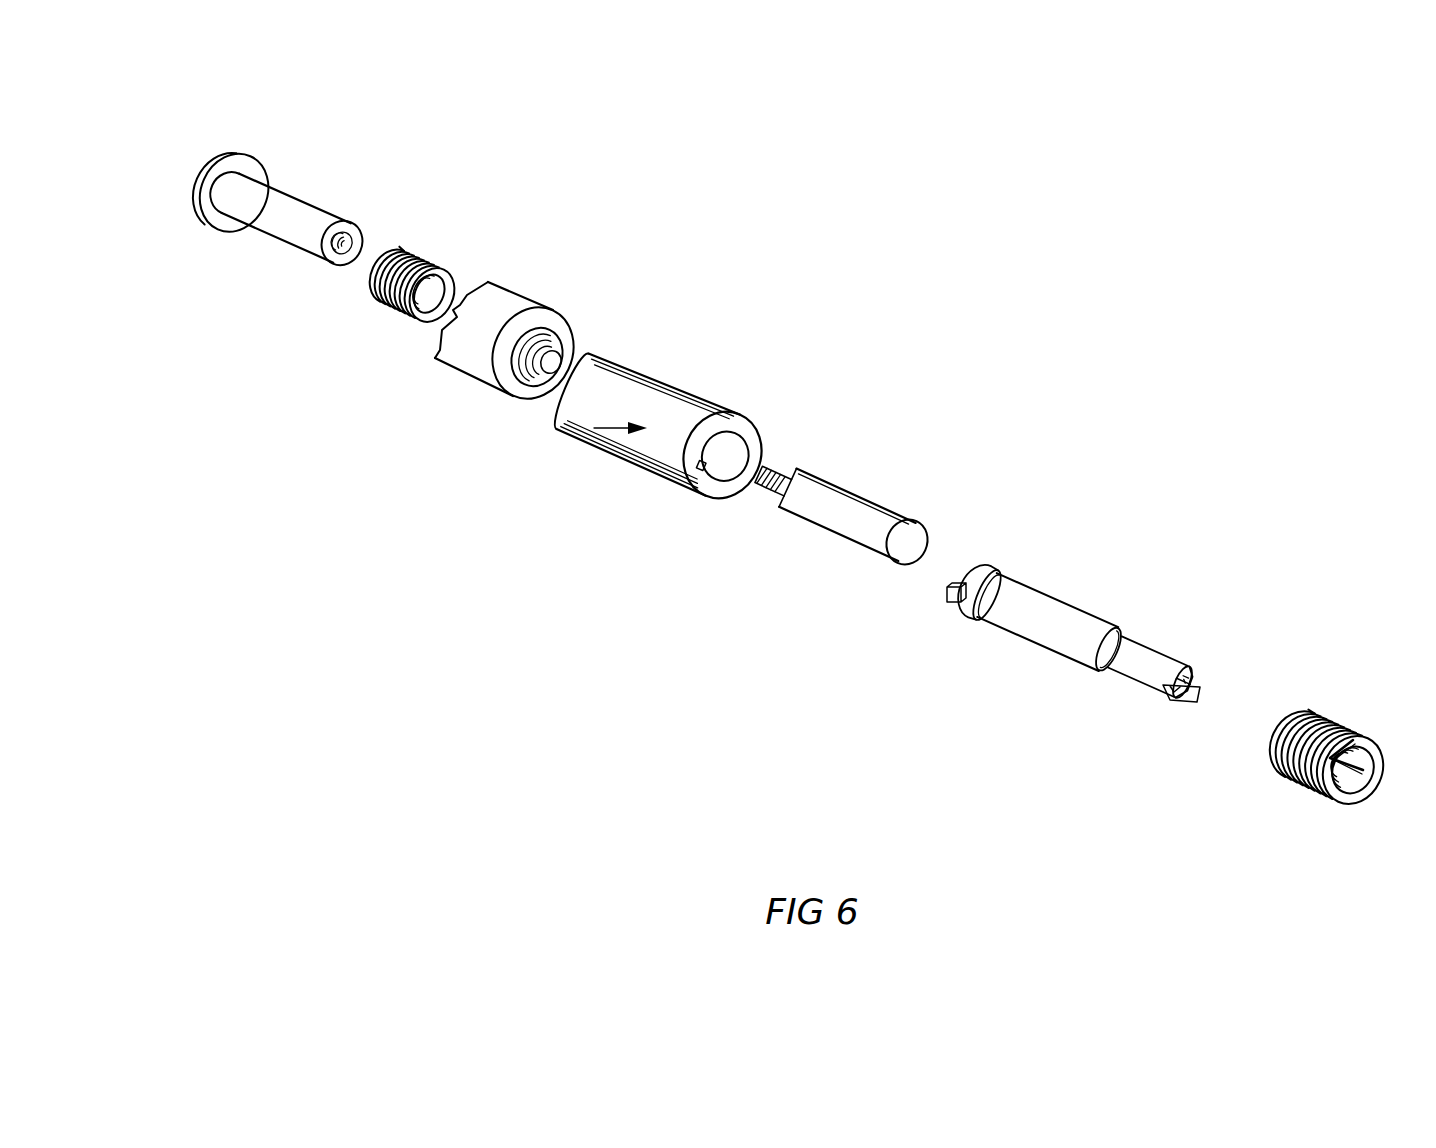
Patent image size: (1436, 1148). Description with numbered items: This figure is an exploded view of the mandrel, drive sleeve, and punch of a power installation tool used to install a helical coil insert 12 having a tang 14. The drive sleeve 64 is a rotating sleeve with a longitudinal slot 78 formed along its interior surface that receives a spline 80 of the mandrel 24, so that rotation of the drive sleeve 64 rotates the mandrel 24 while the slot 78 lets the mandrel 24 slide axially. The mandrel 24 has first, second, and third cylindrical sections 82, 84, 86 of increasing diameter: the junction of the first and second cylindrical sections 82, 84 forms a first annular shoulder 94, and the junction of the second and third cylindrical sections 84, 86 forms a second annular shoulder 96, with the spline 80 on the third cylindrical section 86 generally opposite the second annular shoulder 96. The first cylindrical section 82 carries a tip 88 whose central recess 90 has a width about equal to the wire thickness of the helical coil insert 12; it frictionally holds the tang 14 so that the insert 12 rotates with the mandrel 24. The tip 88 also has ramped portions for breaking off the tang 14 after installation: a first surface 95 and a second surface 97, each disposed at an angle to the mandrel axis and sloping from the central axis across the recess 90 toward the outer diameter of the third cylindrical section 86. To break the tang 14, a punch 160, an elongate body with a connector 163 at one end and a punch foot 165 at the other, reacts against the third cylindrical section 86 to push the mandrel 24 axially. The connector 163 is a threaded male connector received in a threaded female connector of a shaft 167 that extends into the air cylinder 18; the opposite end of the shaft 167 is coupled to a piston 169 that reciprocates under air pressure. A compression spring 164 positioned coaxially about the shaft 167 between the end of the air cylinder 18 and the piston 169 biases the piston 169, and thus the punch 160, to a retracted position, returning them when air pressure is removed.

The helical coil insert 12 is at (1338, 820).
The tang 14 is at (1373, 740).
The air cylinder 18 is at (462, 347).
The mandrel 24 is at (1106, 648).
The drive sleeve 64 is at (585, 434).
The longitudinal slot 78 is at (700, 470).
The spline 80 is at (948, 603).
The first cylindrical section 82 is at (1142, 682).
The second cylindrical section 84 is at (1030, 620).
The third cylindrical section 86 is at (977, 563).
The tip 88 is at (1173, 718).
The central recess 90 is at (1202, 683).
The first annular shoulder 94 is at (1097, 631).
The first surface 95 is at (1190, 697).
The second annular shoulder 96 is at (1005, 567).
The second surface 97 is at (1180, 663).
The punch 160 is at (853, 548).
The connector 163 is at (788, 470).
The compression spring 164 is at (428, 258).
The punch foot 165 is at (908, 540).
The shaft 167 is at (297, 213).
The piston 169 is at (232, 146).